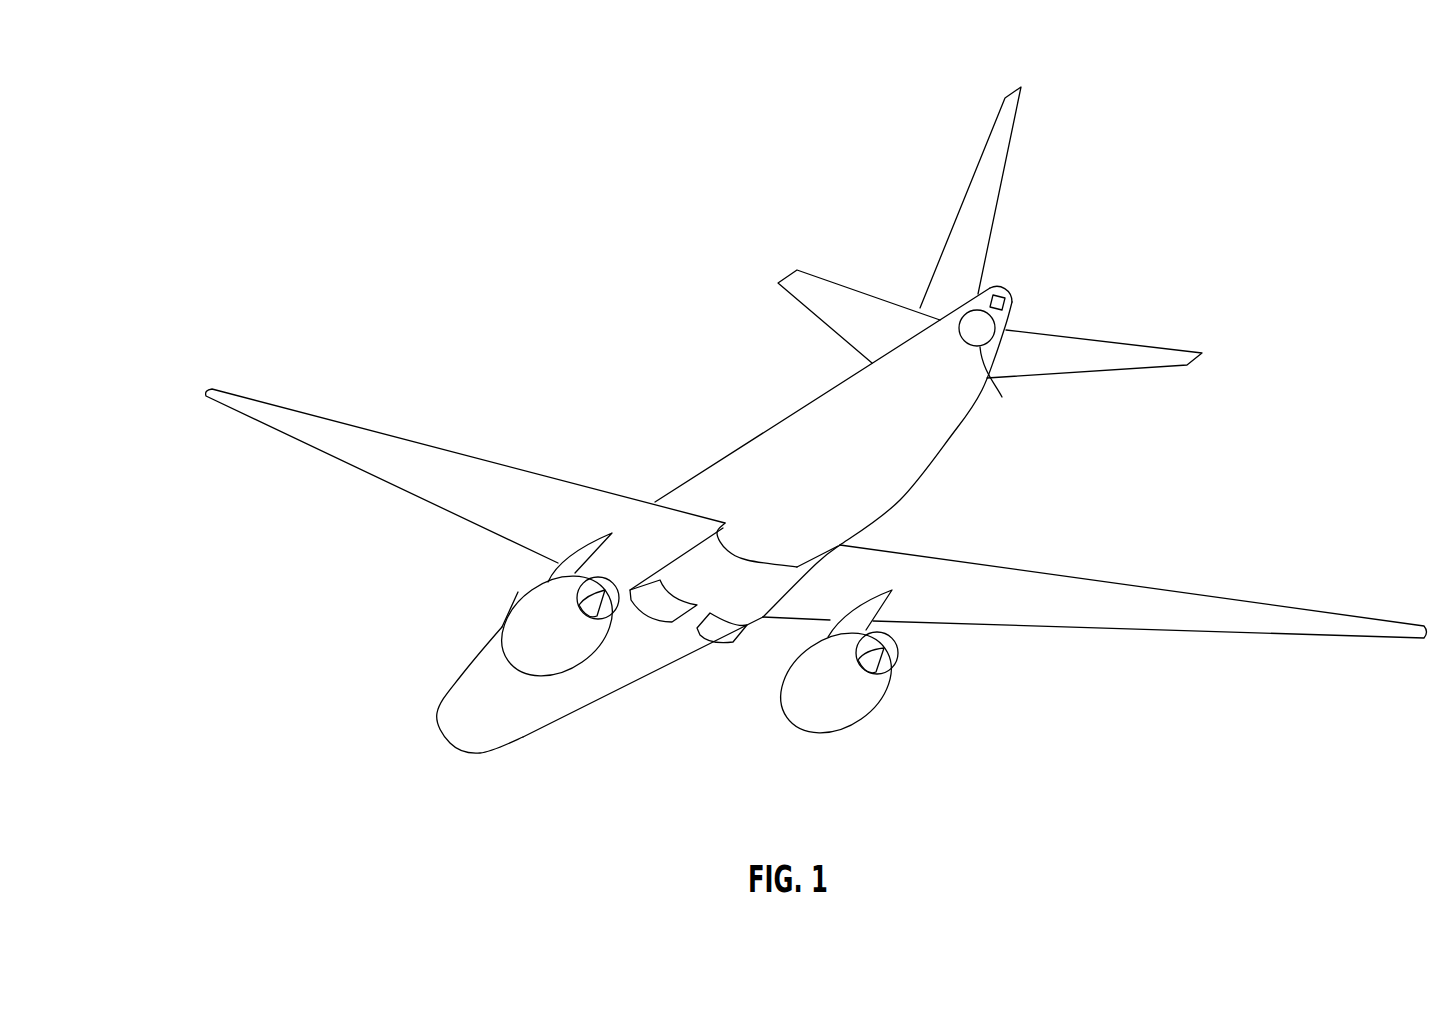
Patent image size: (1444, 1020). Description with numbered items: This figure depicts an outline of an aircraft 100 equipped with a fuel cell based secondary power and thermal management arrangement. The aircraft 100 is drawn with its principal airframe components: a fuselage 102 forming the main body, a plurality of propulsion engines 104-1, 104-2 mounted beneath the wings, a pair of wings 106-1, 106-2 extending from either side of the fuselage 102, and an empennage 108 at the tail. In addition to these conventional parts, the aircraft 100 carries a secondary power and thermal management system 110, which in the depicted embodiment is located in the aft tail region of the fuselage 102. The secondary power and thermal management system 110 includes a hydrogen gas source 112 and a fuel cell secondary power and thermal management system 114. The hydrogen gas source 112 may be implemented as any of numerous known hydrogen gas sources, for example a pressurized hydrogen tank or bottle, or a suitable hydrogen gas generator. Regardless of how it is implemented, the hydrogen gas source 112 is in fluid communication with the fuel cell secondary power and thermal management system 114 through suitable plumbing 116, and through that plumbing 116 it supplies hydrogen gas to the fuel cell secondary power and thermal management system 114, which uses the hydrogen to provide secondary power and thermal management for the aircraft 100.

The aircraft 100 is at (188, 60).
The fuselage 102 is at (706, 464).
The propulsion engine 104-1 is at (525, 615).
The propulsion engine 104-2 is at (810, 715).
The wing 106-1 is at (370, 443).
The wing 106-2 is at (1170, 607).
The empennage 108 is at (1076, 204).
The secondary power and thermal management system 110 is at (957, 354).
The hydrogen gas source 112 is at (1005, 389).
The fuel cell secondary power and thermal management system 114 is at (1008, 296).
The plumbing 116 is at (1010, 306).